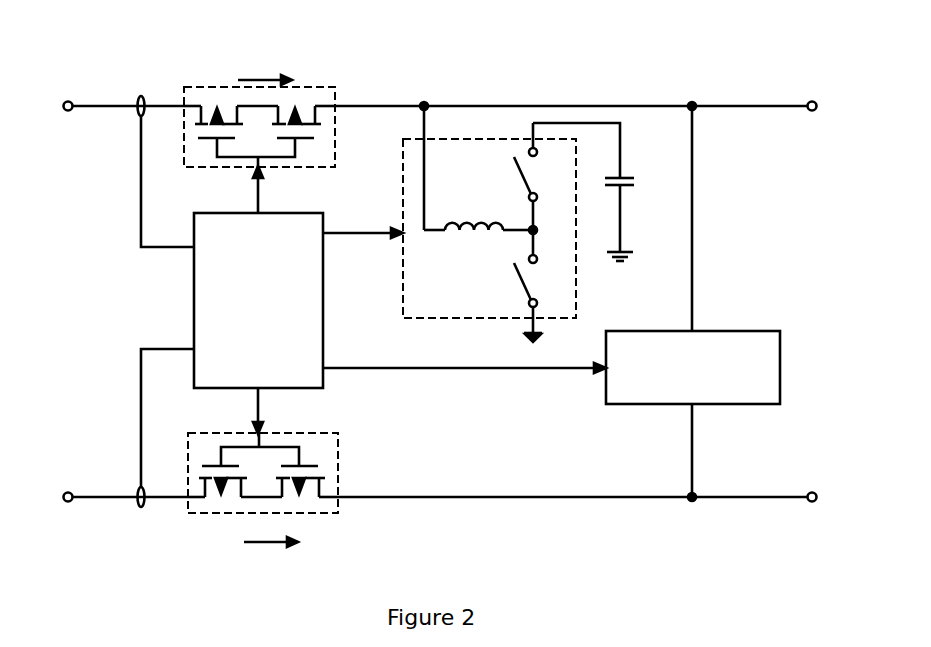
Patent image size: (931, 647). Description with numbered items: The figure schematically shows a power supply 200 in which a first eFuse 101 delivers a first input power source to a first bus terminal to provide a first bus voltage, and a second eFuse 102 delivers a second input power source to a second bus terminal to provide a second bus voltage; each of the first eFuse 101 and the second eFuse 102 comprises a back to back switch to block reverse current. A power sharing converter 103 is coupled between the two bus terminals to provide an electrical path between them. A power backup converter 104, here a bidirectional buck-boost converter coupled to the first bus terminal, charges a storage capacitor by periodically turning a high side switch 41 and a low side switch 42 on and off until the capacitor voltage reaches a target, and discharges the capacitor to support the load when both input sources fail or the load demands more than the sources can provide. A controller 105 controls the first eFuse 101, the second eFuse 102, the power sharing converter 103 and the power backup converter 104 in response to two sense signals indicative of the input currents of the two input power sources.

The power supply 200 is at (148, 52).
The first eFuse 101 is at (283, 127).
The second eFuse 102 is at (282, 487).
The power sharing converter 103 is at (693, 367).
The power backup converter 104 is at (457, 301).
The controller 105 is at (400, 300).
The high side switch 41 is at (514, 174).
The low side switch 42 is at (514, 281).